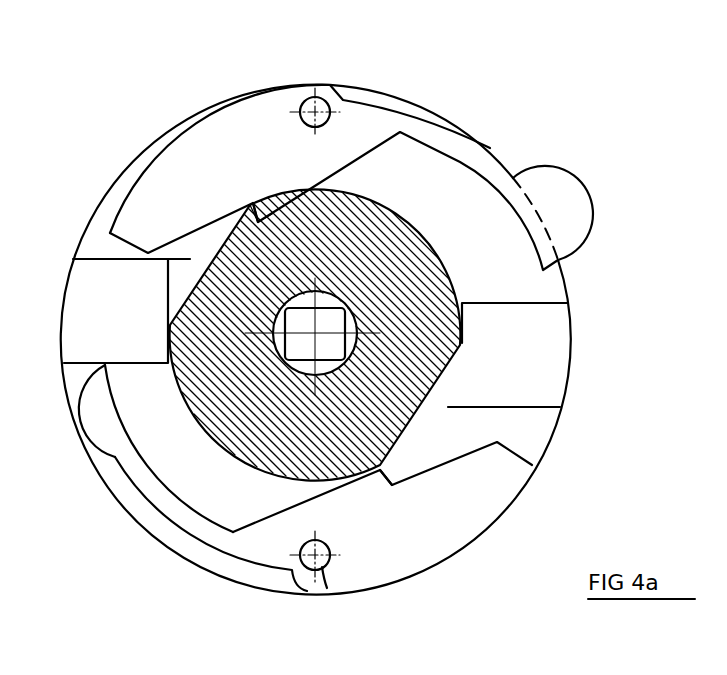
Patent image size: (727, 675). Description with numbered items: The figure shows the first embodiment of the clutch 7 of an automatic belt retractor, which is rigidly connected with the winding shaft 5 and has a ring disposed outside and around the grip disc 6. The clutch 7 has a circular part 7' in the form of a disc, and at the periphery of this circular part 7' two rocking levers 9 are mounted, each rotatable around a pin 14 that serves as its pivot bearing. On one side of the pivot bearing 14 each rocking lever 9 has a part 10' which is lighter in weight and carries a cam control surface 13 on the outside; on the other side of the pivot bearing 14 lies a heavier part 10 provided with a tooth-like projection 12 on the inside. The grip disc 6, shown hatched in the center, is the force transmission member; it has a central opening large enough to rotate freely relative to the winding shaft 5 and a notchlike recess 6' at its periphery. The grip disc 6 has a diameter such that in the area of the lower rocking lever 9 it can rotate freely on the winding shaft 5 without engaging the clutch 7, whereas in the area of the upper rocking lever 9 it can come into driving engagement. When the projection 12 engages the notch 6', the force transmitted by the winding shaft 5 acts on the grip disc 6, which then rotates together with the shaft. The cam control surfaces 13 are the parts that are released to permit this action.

The winding shaft 5 is at (342, 343).
The grip disc 6 is at (404, 335).
The notchlike recess 6' is at (167, 177).
The clutch 7 is at (347, 340).
The circular part 7' is at (103, 298).
The rocking lever 9 is at (320, 90).
The heavier part 10 is at (346, 306).
The lighter part 10' is at (334, 350).
The projection 12 is at (252, 205).
The cam control surface 13 is at (573, 213).
The pin 14 is at (317, 108).